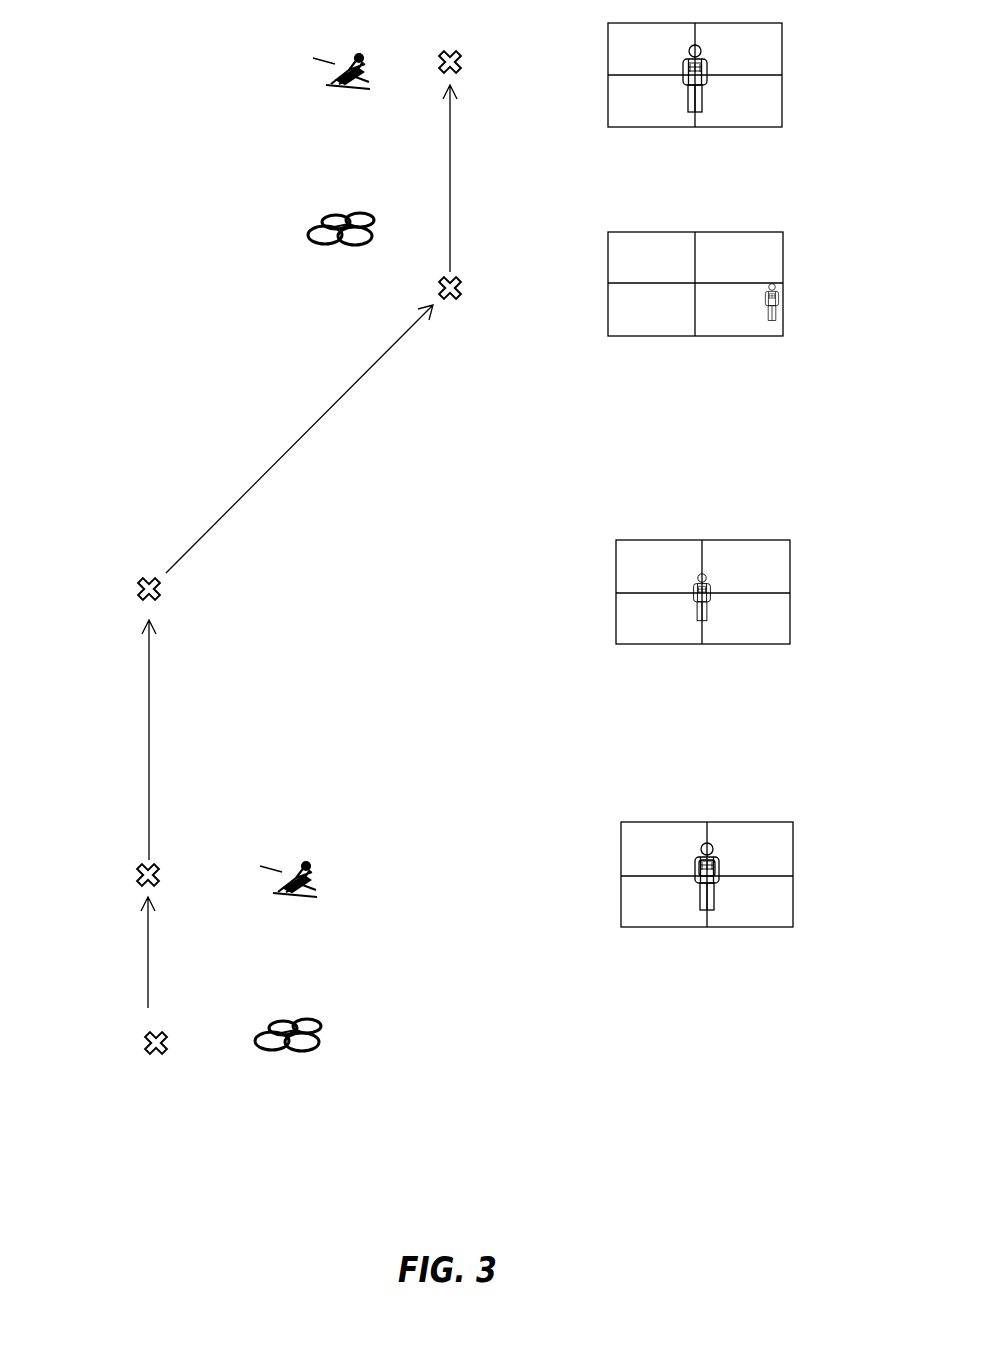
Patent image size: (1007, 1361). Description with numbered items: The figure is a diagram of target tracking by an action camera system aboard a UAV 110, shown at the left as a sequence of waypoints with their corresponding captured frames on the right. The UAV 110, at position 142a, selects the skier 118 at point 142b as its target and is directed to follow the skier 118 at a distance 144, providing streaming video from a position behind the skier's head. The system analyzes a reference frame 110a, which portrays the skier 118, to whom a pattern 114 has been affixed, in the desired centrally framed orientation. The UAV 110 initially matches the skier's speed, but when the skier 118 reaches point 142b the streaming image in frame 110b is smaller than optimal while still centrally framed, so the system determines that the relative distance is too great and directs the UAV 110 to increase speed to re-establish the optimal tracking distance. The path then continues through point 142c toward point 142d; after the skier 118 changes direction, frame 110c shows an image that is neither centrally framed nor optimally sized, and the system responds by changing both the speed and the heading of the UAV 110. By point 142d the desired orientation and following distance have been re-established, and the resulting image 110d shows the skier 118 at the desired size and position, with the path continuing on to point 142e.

The UAV 110 is at (322, 1036).
The reference frame 110a is at (621, 926).
The frame 110b is at (616, 643).
The frame 110c is at (608, 335).
The image 110d is at (608, 126).
The pattern 114 is at (696, 870).
The skier 118 is at (320, 878).
The position 142a is at (115, 1043).
The point 142b is at (111, 875).
The third waypoint 142c is at (113, 589).
The point 142d is at (452, 308).
The fifth waypoint 142e is at (477, 62).
The distance 144 is at (148, 945).